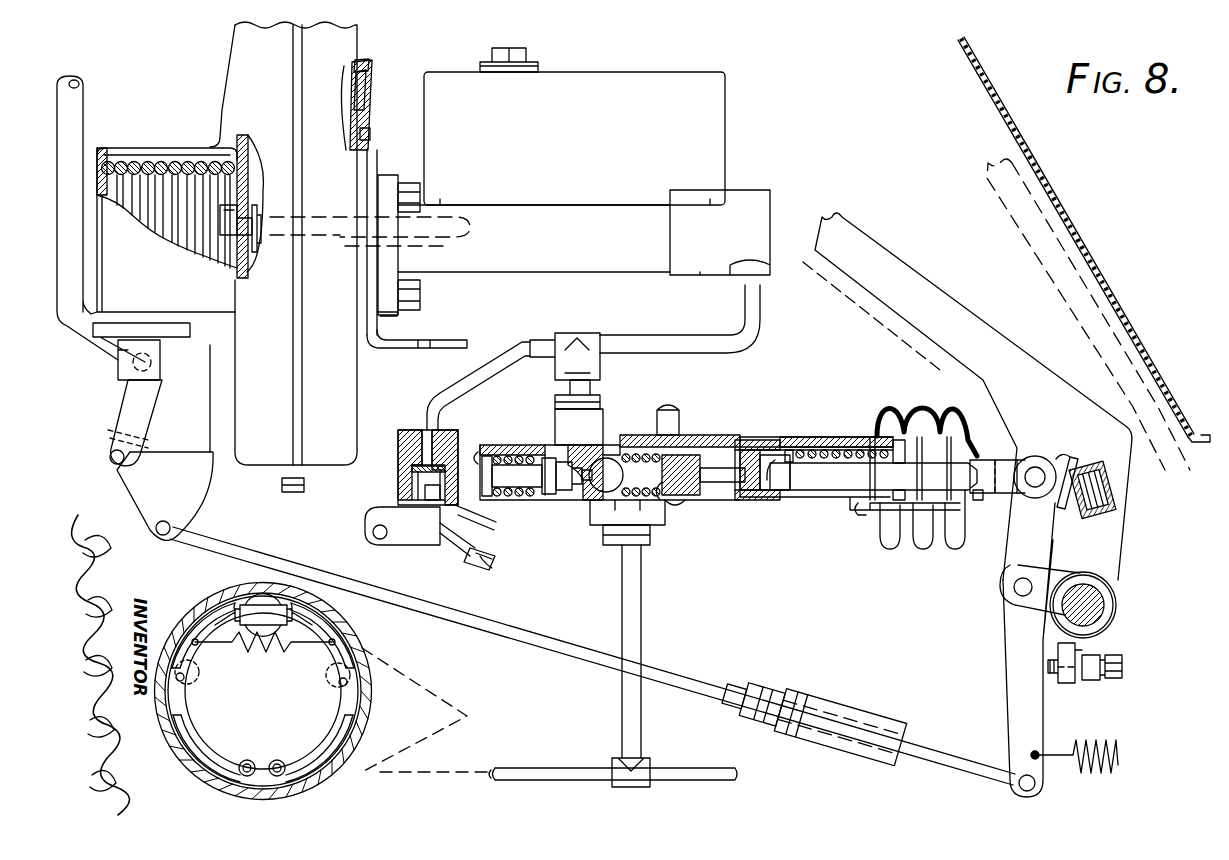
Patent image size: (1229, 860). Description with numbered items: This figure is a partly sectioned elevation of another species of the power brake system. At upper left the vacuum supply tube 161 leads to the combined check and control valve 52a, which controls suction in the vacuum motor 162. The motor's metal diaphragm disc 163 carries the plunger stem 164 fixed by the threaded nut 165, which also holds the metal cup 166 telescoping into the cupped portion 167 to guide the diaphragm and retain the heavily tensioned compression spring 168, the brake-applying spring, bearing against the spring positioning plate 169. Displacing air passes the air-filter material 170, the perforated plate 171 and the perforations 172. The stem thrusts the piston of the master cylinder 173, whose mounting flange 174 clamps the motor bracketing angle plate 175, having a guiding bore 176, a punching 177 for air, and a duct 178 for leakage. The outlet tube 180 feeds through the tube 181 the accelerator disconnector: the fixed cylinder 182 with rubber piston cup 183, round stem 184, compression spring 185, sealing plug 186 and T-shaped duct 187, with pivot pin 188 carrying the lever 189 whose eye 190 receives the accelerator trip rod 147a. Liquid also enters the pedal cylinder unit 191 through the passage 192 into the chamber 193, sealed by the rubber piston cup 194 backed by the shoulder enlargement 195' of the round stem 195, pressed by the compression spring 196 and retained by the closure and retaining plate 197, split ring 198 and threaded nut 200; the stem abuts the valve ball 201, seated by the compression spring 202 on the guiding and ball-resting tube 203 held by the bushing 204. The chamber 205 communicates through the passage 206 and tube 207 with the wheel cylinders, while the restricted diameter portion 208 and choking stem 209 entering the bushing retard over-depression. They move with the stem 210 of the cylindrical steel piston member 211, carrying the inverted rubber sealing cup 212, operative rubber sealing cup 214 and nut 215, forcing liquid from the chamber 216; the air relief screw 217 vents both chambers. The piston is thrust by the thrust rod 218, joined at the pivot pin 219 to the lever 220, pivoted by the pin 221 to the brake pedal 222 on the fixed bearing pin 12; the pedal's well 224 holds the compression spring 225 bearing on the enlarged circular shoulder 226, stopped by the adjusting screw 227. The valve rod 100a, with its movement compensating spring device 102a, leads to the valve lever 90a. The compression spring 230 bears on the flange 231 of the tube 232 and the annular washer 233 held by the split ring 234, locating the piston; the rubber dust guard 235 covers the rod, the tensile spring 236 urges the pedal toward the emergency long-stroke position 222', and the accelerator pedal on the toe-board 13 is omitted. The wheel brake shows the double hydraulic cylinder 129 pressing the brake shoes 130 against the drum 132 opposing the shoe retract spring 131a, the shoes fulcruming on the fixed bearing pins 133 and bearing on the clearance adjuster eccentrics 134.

The fixed bearing pin 12 is at (1092, 605).
The toe-board 13 is at (1010, 118).
The combined check and control valve 52a is at (120, 405).
The valve lever 90a is at (205, 492).
The valve rod 100a is at (508, 628).
The movement compensating spring device 102a is at (846, 706).
The double hydraulic cylinder 129 is at (256, 605).
The brake shoes 130 is at (190, 720).
The shoe retract spring 131a is at (268, 642).
The drum 132 is at (356, 640).
The fixed bearing pins 133 is at (248, 766).
The clearance adjuster eccentrics 134 is at (335, 680).
The accelerator trip rod 147a is at (487, 548).
The vacuum supply tube 161 is at (83, 98).
The vacuum motor 162 is at (233, 47).
The metal diaphragm disc 163 is at (244, 162).
The plunger stem 164 is at (250, 262).
The threaded nut 165 is at (224, 246).
The metal cup 166 is at (190, 146).
The cupped portion 167 is at (130, 160).
The compression spring 168 is at (147, 160).
The spring positioning plate 169 is at (103, 150).
The air-filter material 170 is at (358, 116).
The perforated plate 171 is at (356, 96).
The perforations 172 is at (362, 78).
The master cylinder 173 is at (570, 272).
The mounting flange 174 is at (390, 176).
The motor bracketing angle plate 175 is at (430, 350).
The guiding bore 176 is at (372, 242).
The punching 177 is at (372, 206).
The duct 178 is at (389, 320).
The outlet tube 180 is at (743, 305).
The tube 181 is at (515, 345).
The fixed cylinder 182 is at (412, 492).
The rubber piston cup 183 is at (412, 460).
The round stem 184 is at (464, 548).
The compression spring 185 is at (412, 478).
The sealing plug 186 is at (412, 440).
The T-shaped duct 187 is at (414, 444).
The pivot pin 188 is at (372, 538).
The lever 189 is at (440, 546).
The eye 190 is at (488, 562).
The pedal cylinder unit 191 is at (792, 500).
The passage 192 is at (597, 437).
The chamber 193 is at (577, 498).
The rubber piston cup 194 is at (540, 447).
The round stem 195 is at (505, 493).
The shoulder enlargement 195' is at (530, 490).
The compression spring 196 is at (512, 455).
The closure and retaining plate 197 is at (496, 452).
The split ring 198 is at (486, 455).
The threaded nut 200 is at (563, 493).
The valve ball 201 is at (604, 490).
The compression spring 202 is at (641, 447).
The guiding and ball-resting tube 203 is at (655, 507).
The bushing 204 is at (672, 498).
The chamber 205 is at (612, 462).
The passage 206 is at (628, 500).
The tube 207 is at (643, 612).
The restricted diameter portion 208 is at (686, 447).
The choking stem 209 is at (708, 466).
The stem 210 is at (775, 476).
The cylindrical steel piston member 211 is at (800, 470).
The inverted rubber sealing cup 212 is at (768, 462).
The operative rubber sealing cup 214 is at (750, 462).
The nut 215 is at (728, 498).
The chamber 216 is at (742, 450).
The air relief screw 217 is at (664, 410).
The thrust rod 218 is at (840, 478).
The pivot pin 219 is at (1032, 472).
The lever 220 is at (1005, 688).
The pin 221 is at (1012, 592).
The brake pedal 222 is at (967, 396).
The emergency long-stroke position 222' is at (1069, 314).
The well 224 is at (1108, 488).
The compression spring 225 is at (1072, 512).
The enlarged circular shoulder 226 is at (1068, 452).
The adjusting screw 227 is at (1092, 680).
The compression spring 230 is at (860, 452).
The flange 231 is at (822, 460).
The tube 232 is at (872, 448).
The annular washer 233 is at (905, 422).
The split ring 234 is at (900, 452).
The rubber dust guard 235 is at (880, 543).
The tensile spring 236 is at (1088, 742).